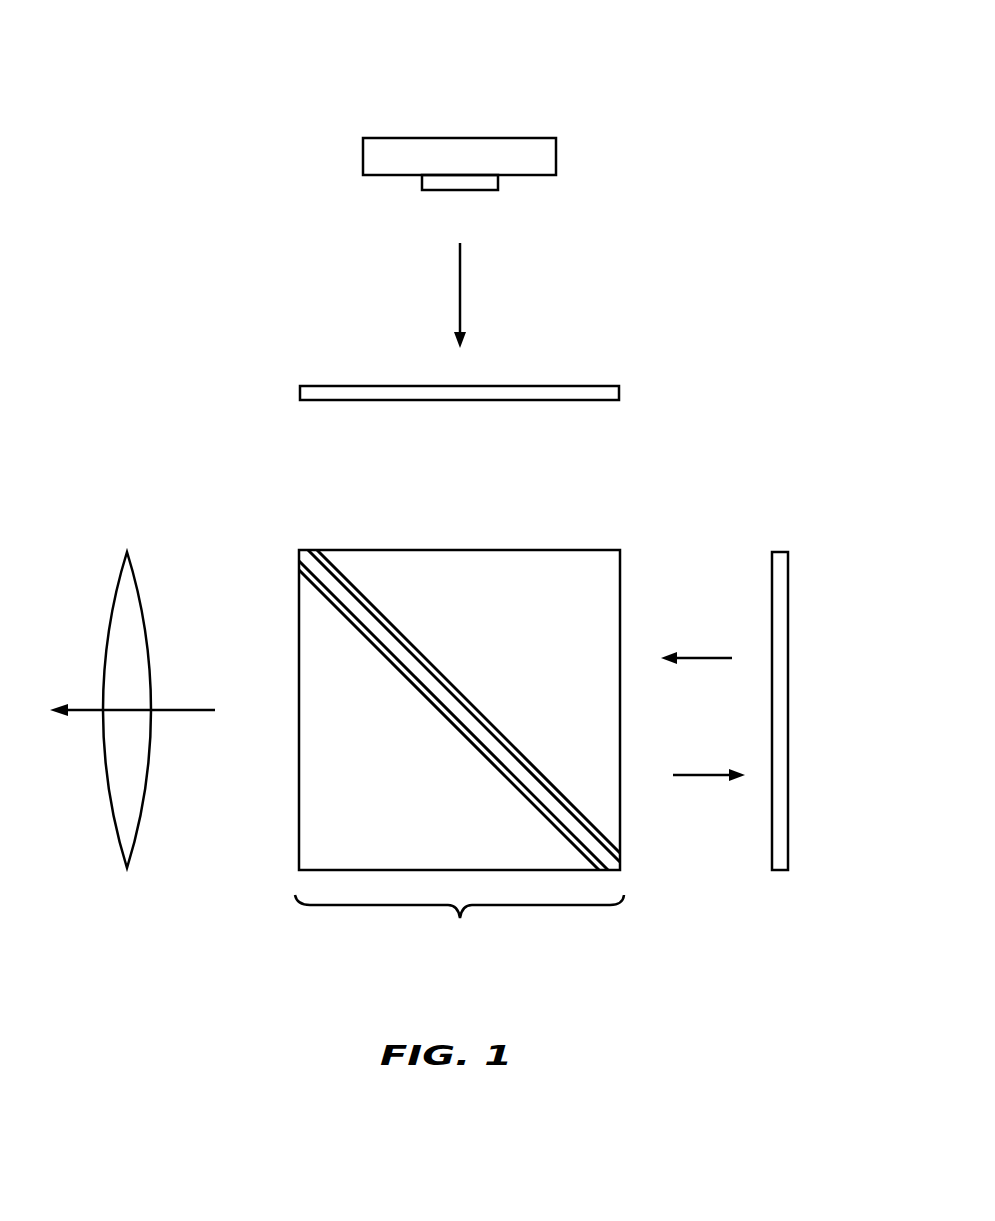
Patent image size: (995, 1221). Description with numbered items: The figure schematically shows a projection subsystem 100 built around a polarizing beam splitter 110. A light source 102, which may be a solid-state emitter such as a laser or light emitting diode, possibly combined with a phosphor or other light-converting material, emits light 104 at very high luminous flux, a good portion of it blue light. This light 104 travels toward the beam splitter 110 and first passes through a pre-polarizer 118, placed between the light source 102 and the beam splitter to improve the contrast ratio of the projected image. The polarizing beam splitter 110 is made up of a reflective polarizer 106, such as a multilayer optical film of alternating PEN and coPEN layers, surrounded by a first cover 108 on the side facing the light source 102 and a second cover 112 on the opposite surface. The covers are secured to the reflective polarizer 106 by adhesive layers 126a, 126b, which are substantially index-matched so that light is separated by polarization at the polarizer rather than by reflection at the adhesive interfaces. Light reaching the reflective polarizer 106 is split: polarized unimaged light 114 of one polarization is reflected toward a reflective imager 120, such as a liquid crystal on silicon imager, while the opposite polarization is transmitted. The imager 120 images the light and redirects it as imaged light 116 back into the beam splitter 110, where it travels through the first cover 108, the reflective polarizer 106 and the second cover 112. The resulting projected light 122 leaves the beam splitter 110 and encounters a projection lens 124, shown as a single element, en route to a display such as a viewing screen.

The projection subsystem 100 is at (260, 78).
The light source 102 is at (490, 183).
The light 104 is at (461, 295).
The pre-polarizer 118 is at (613, 393).
The first cover 108 is at (540, 567).
The adhesive layer 126a is at (318, 552).
The adhesive layer 126b is at (304, 568).
The reflective polarizer 106 is at (610, 858).
The second cover 112 is at (317, 808).
The polarizing beam splitter 110 is at (459, 923).
The imager 120 is at (782, 723).
The imaged light 116 is at (682, 655).
The polarized unimaged light 114 is at (705, 777).
The projection lens 124 is at (118, 592).
The projected light 122 is at (82, 708).